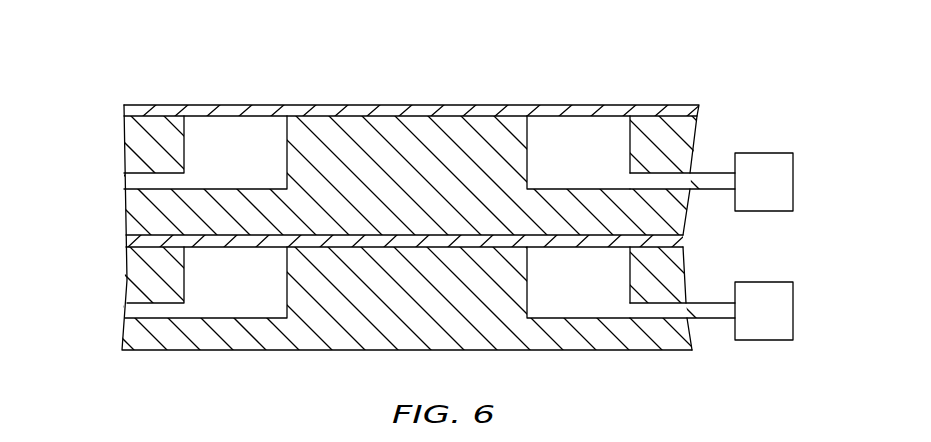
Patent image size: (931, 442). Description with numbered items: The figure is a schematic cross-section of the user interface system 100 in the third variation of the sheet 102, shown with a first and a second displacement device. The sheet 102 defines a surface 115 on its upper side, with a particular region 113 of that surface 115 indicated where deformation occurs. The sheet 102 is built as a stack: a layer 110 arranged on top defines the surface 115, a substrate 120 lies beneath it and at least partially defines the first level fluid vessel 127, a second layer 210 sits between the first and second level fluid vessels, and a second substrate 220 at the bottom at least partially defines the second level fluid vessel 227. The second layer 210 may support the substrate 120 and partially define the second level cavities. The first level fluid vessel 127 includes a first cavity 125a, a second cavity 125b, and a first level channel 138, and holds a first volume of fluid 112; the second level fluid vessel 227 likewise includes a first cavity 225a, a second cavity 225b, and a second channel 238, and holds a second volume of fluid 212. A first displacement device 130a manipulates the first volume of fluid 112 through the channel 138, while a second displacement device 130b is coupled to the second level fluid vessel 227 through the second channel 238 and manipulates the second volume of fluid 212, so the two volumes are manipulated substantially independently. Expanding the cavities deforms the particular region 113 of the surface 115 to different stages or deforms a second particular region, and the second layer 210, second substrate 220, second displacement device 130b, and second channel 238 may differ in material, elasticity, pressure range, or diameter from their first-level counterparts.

The user interface system 100 is at (75, 107).
The sheet 102 is at (118, 100).
The layer 110 is at (325, 109).
The first volume of fluid 112 is at (204, 137).
The particular region of the surface 113 is at (234, 103).
The surface 115 is at (643, 105).
The substrate 120 is at (207, 170).
The first cavity 125a is at (263, 167).
The second cavity 125b is at (607, 167).
The first level fluid vessel 127 is at (160, 182).
The first displacement device 130a is at (787, 197).
The second displacement device 130b is at (787, 326).
The first level channel 138 is at (135, 180).
The second layer 210 is at (323, 236).
The second volume of fluid 212 is at (252, 297).
The second substrate 220 is at (232, 330).
The first cavity 225a is at (263, 291).
The second cavity 225b is at (607, 291).
The second level fluid vessel 227 is at (208, 303).
The second channel 238 is at (127, 312).